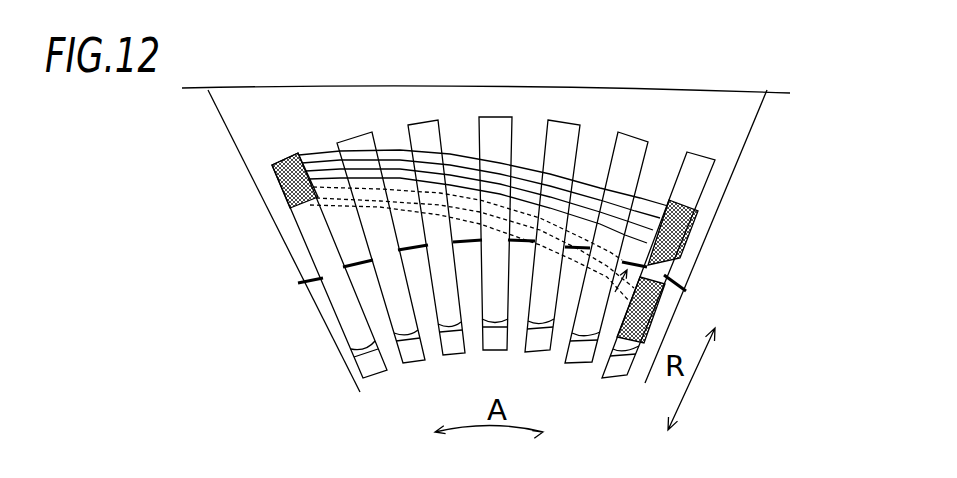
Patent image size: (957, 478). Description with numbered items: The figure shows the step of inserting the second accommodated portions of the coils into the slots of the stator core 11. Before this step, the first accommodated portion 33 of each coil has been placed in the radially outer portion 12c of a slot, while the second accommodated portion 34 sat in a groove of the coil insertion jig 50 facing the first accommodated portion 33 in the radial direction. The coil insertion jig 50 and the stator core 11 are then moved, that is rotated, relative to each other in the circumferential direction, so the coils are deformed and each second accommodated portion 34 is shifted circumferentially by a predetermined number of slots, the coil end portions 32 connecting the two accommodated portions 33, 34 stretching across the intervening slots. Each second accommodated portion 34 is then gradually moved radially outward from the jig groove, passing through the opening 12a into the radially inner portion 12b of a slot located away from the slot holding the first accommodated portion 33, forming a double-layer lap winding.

The stator core 11 is at (653, 103).
The opening 12a is at (655, 272).
The radially inner portion 12b is at (549, 131).
The radially outer portion 12c is at (690, 206).
The coil end portion 32 is at (457, 152).
The first accommodated portion 33 is at (284, 193).
The second accommodated portion 34 is at (694, 211).
The coil insertion jig 50 is at (330, 308).